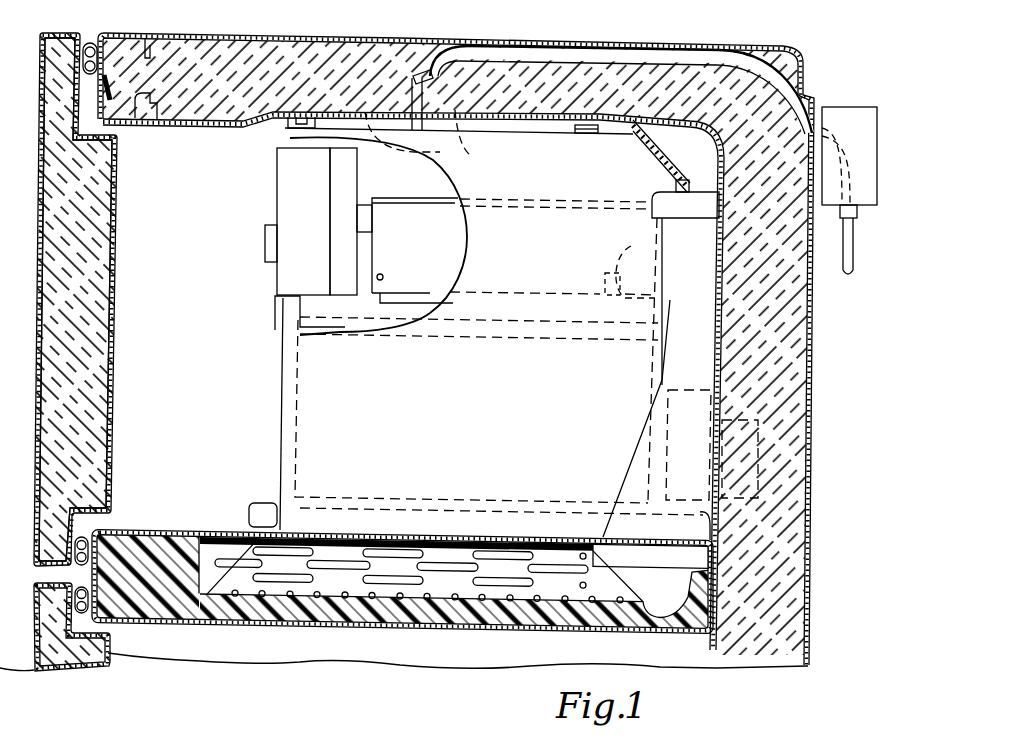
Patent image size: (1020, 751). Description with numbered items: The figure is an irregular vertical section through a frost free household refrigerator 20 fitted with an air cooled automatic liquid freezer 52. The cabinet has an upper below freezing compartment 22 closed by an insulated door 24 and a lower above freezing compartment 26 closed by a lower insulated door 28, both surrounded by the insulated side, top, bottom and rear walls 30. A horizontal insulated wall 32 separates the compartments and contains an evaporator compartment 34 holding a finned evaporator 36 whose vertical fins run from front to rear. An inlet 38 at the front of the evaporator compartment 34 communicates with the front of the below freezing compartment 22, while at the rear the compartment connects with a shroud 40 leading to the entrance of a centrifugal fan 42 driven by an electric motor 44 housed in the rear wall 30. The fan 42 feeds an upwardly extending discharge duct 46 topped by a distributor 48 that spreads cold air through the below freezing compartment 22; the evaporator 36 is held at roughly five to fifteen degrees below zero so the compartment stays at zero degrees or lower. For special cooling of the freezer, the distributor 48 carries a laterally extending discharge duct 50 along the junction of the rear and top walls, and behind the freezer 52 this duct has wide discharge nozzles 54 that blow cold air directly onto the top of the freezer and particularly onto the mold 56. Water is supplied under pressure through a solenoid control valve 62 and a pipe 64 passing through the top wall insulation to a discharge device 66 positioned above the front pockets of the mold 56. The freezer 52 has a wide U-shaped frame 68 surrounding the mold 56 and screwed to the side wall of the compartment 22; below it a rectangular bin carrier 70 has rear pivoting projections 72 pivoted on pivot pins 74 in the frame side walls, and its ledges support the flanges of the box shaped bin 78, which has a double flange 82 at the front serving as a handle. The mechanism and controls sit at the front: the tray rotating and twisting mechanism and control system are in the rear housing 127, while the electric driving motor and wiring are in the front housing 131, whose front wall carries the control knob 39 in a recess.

The household refrigerator 20 is at (808, 637).
The below freezing compartment 22 is at (282, 382).
The insulated door 24 is at (71, 43).
The above freezing compartment 26 is at (380, 654).
The lower insulated door 28 is at (68, 667).
The insulated walls 30 is at (783, 397).
The horizontal insulated wall 32 is at (287, 613).
The evaporator compartment 34 is at (207, 576).
The finned evaporator 36 is at (447, 560).
The inlet 38 is at (205, 524).
The motor mount block 39 is at (265, 242).
The shroud 40 is at (633, 481).
The centrifugal fan 42 is at (680, 419).
The electric motor 44 is at (760, 500).
The discharge duct 46 is at (661, 345).
The distributor 48 is at (683, 210).
The laterally extending discharge duct 50 is at (648, 140).
The liquid freezer 52 is at (405, 283).
The discharge nozzles 54 is at (674, 185).
The mold 56 is at (513, 200).
The solenoid control valve 62 is at (850, 123).
The pipe 64 is at (640, 62).
The discharge device 66 is at (440, 151).
The U-shaped frame 68 is at (440, 246).
The bin carrier 70 is at (345, 327).
The pivoting projections 72 is at (603, 284).
The pivot pins 74 is at (635, 263).
The bin 78 is at (303, 433).
The double flange 82 is at (273, 325).
The rear housing 127 is at (347, 175).
The front housing 131 is at (288, 162).